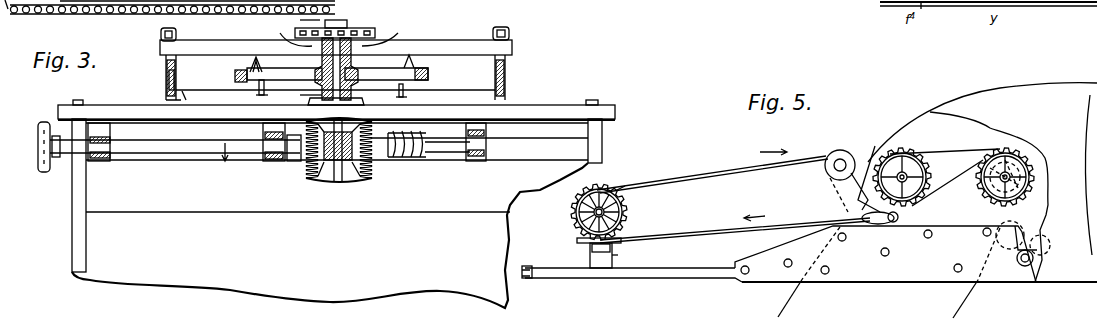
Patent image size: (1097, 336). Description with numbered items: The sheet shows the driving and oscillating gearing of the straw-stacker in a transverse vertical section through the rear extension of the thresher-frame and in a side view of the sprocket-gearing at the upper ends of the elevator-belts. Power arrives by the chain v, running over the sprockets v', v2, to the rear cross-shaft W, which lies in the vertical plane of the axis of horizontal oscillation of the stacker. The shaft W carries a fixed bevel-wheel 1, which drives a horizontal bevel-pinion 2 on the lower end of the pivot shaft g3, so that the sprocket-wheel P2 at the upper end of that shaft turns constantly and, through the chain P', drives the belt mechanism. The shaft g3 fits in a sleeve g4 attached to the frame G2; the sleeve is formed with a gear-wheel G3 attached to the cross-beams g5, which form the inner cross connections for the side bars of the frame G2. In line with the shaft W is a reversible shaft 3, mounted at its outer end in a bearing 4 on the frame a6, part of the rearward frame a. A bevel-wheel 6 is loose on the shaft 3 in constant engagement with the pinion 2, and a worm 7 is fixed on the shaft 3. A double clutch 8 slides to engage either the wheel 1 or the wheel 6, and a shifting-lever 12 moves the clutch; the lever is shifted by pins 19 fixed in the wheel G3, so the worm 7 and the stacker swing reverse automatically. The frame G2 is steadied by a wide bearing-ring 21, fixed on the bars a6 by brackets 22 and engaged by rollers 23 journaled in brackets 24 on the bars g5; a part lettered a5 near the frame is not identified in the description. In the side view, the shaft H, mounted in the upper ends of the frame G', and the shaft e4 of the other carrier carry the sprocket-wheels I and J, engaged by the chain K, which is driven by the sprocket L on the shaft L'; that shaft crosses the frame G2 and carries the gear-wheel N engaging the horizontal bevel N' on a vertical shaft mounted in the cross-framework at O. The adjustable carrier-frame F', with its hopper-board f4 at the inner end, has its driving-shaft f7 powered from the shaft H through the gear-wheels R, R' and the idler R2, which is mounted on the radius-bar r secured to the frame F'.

In FIG. 3, the chain v is at (172, 20).
In FIG. 3, the sprocket v' is at (17, 20).
In FIG. 3, the sprocket v2 is at (44, 174).
In FIG. 3, the cross-beams g5 is at (458, 43).
In FIG. 3, the upper inner stacker frame G2 is at (161, 34).
In FIG. 5, the upper inner stacker frame G2 is at (632, 267).
In FIG. 3, the gear-wheel G3 is at (240, 70).
In FIG. 3, the pivot shaft g3 is at (358, 48).
In FIG. 3, the sleeve g4 is at (280, 36).
In FIG. 3, the sprocket-wheel P2 is at (383, 21).
In FIG. 3, the brackets 24 is at (178, 63).
In FIG. 3, the rollers 23 is at (166, 72).
In FIG. 3, the bearing-ring 21 is at (168, 82).
In FIG. 3, the brackets 22 is at (186, 90).
In FIG. 3, the pins 19 is at (258, 88).
In FIG. 3, the arm a5 is at (300, 95).
In FIG. 3, the frame a is at (313, 104).
In FIG. 3, the frame bars a6 is at (128, 116).
In FIG. 3, the shifting-lever 12 is at (300, 120).
In FIG. 3, the rear cross-shaft W is at (192, 150).
In FIG. 3, the bevel-pinion 2 is at (362, 110).
In FIG. 3, the bevel-wheel 1 is at (306, 165).
In FIG. 3, the double clutch 8 is at (330, 166).
In FIG. 3, the bevel-wheel 6 is at (364, 172).
In FIG. 3, the worm 7 is at (406, 158).
In FIG. 3, the reversible shaft 3 is at (447, 155).
In FIG. 3, the bearing 4 is at (487, 134).
In FIG. 5, the chain P' is at (528, 283).
In FIG. 5, the stacker frame part G' is at (916, 271).
In FIG. 5, the adjustable carrier-frame F' is at (1008, 273).
In FIG. 5, the chain K is at (748, 164).
In FIG. 5, the driving-sprocket L is at (608, 212).
In FIG. 5, the gear-wheel N is at (633, 173).
In FIG. 5, the shaft L' is at (575, 225).
In FIG. 5, the horizontal bevel N' is at (590, 255).
In FIG. 5, the cross-framework O is at (622, 257).
In FIG. 5, the shaft e4 is at (900, 176).
In FIG. 5, the sprocket-wheel J is at (910, 165).
In FIG. 5, the sprocket-wheel I is at (975, 196).
In FIG. 5, the shaft H is at (1032, 150).
In FIG. 5, the gear-wheel R is at (1014, 149).
In FIG. 5, the hopper-board f4 is at (982, 182).
In FIG. 5, the intermediate idler R2 is at (1030, 215).
In FIG. 5, the radius-bar r is at (1040, 226).
In FIG. 5, the driving-shaft f7 is at (1033, 258).
In FIG. 5, the gear-wheel R' is at (1052, 258).